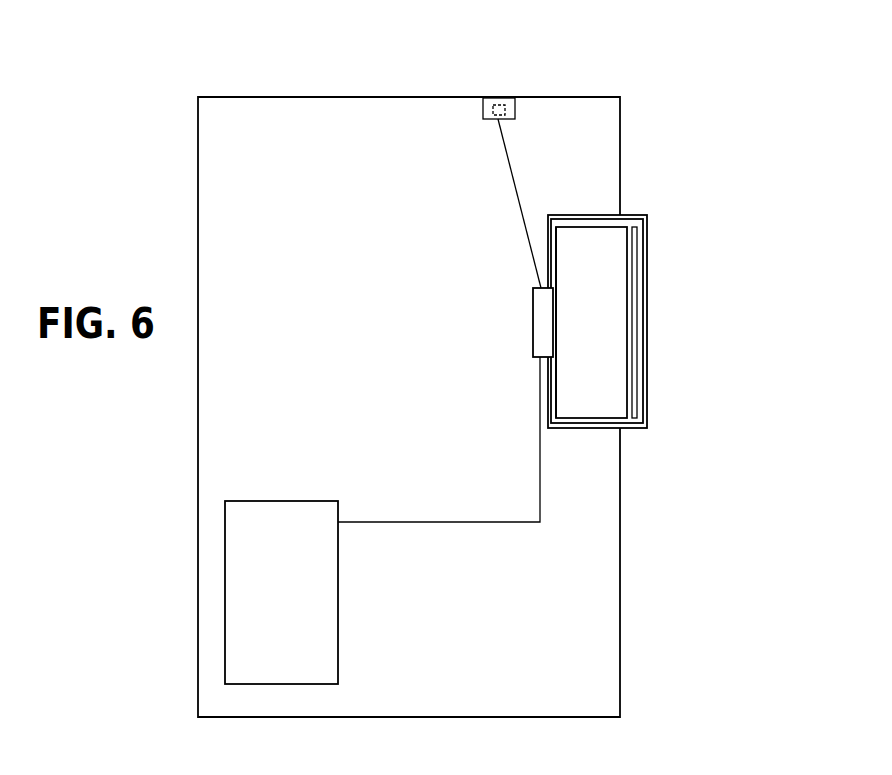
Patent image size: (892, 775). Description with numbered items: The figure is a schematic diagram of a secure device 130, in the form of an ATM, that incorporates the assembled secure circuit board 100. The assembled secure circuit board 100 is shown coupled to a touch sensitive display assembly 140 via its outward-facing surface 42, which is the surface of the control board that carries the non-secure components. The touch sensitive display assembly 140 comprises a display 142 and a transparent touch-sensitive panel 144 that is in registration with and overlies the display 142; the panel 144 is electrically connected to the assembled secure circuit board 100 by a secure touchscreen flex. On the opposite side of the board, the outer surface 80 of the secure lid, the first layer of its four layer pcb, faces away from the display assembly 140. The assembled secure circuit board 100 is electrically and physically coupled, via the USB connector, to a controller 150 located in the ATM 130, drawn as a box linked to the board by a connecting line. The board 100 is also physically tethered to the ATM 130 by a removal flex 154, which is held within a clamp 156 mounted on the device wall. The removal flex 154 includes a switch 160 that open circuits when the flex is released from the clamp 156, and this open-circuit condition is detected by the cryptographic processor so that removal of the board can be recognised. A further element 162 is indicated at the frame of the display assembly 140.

The secure device 130 is at (197, 148).
The clamp 156 is at (500, 98).
The switch 160 is at (483, 111).
The removal flex 154 is at (518, 203).
The touch sensitive display assembly 140 is at (650, 208).
The door frame 162 is at (551, 230).
The display 142 is at (585, 420).
The outward-facing surface 42 is at (557, 338).
The transparent touch-sensitive panel 144 is at (642, 405).
The assembled secure circuit board 100 is at (526, 342).
The outer surface 80 is at (533, 308).
The controller 150 is at (338, 620).